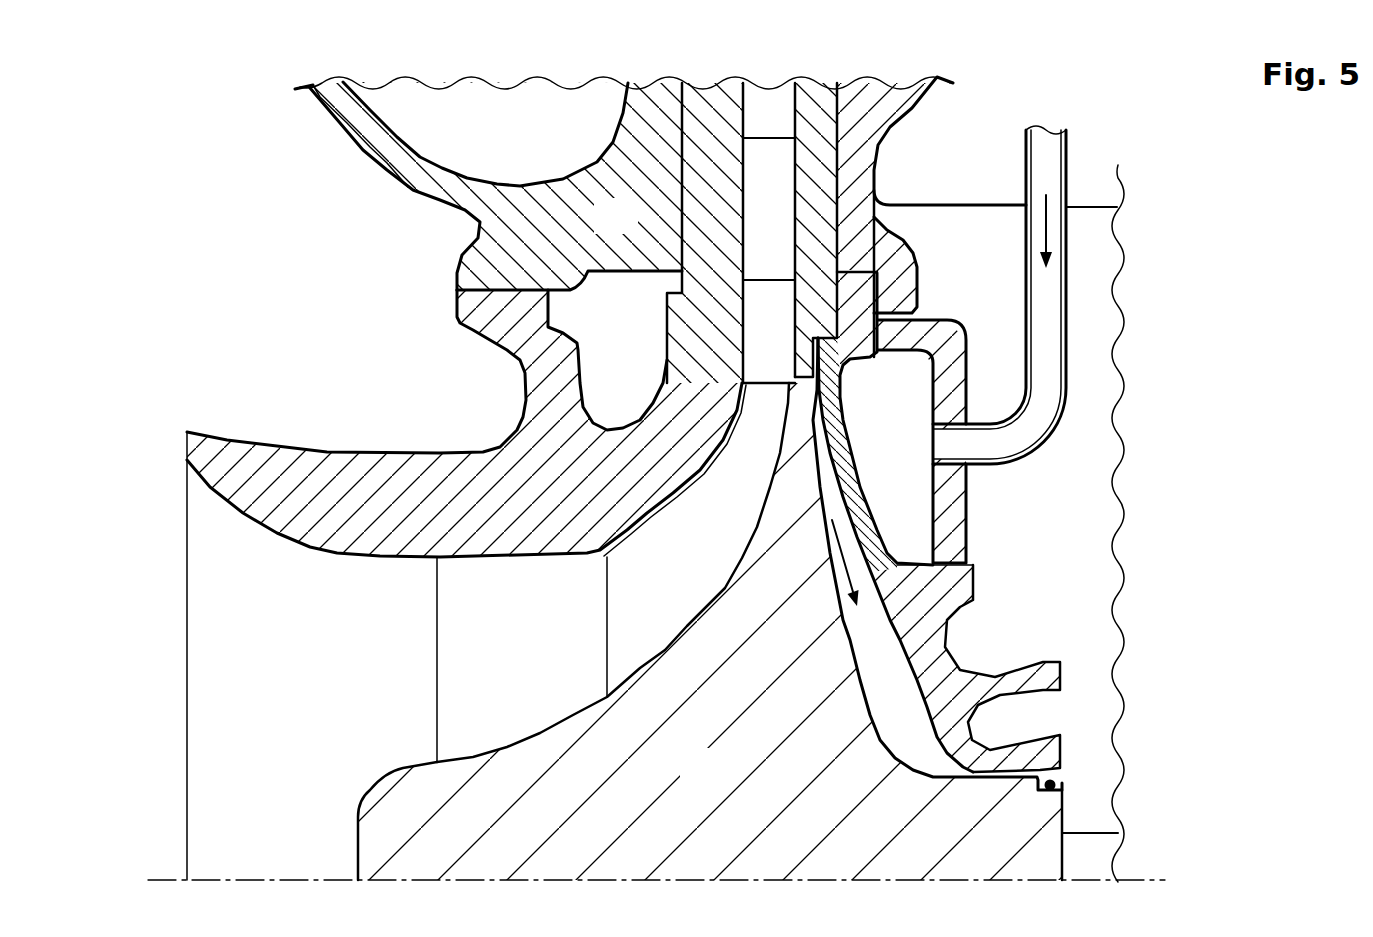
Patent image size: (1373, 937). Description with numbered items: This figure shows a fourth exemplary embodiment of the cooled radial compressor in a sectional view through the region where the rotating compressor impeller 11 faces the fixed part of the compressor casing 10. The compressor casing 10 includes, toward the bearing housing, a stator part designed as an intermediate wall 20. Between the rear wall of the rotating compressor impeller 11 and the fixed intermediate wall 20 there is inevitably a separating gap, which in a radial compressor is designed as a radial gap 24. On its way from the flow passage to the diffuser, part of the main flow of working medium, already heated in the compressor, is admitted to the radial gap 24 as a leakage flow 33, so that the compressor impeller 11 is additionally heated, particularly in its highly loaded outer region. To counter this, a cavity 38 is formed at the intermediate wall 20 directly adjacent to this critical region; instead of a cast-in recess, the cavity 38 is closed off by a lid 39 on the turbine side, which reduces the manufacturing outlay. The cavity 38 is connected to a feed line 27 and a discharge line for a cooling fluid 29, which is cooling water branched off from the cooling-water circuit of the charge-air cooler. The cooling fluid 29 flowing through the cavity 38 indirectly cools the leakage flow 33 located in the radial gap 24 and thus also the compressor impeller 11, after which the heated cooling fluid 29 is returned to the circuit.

The compressor casing 10 is at (634, 231).
The compressor impeller 11 is at (721, 781).
The intermediate wall 20 is at (857, 502).
The radial gap 24 is at (876, 653).
The feed line 27 is at (1046, 307).
The cooling fluid 29 is at (1040, 234).
The leakage flow 33 is at (855, 565).
The cavity 38 is at (895, 468).
The lid 39 is at (948, 385).